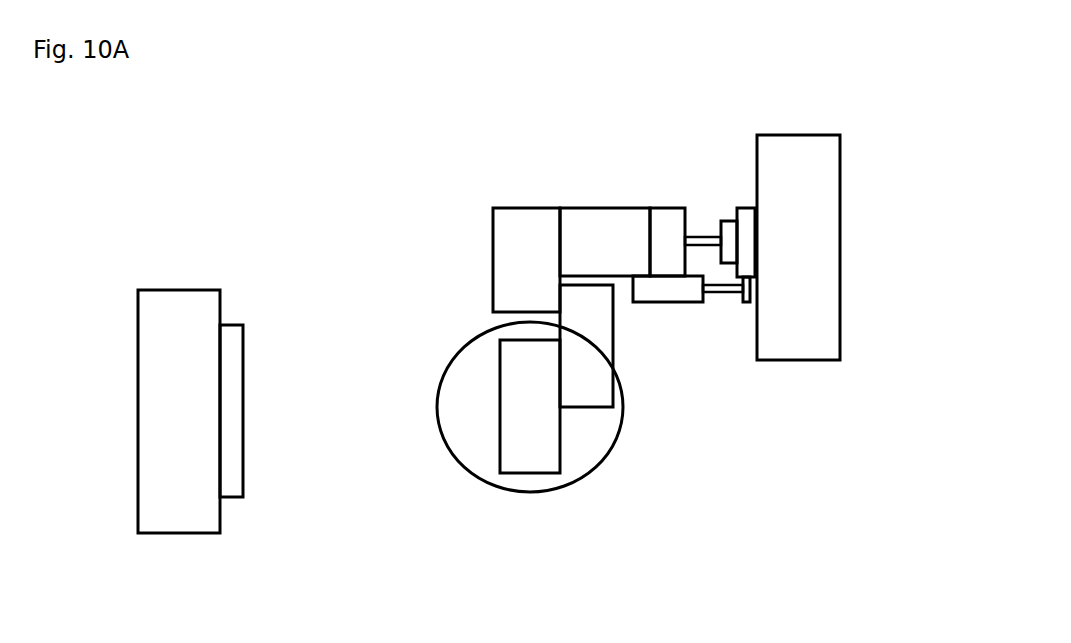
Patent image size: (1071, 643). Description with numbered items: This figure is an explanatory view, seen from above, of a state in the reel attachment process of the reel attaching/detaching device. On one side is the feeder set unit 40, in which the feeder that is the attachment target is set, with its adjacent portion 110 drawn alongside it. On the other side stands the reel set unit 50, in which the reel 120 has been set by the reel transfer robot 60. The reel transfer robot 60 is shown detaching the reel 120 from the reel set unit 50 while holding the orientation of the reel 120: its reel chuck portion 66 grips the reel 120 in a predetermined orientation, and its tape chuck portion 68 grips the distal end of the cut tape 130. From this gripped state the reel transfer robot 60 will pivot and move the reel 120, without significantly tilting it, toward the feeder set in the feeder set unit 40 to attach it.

The feeder set unit 40 is at (152, 217).
The first connecting portion 110 is at (230, 498).
The reel transfer robot 60 is at (551, 170).
The reel chuck portion 66 is at (731, 220).
The reel 120 is at (748, 207).
The tape chuck portion 68 is at (725, 298).
The cut tape 130 is at (747, 303).
The reel set unit 50 is at (866, 152).